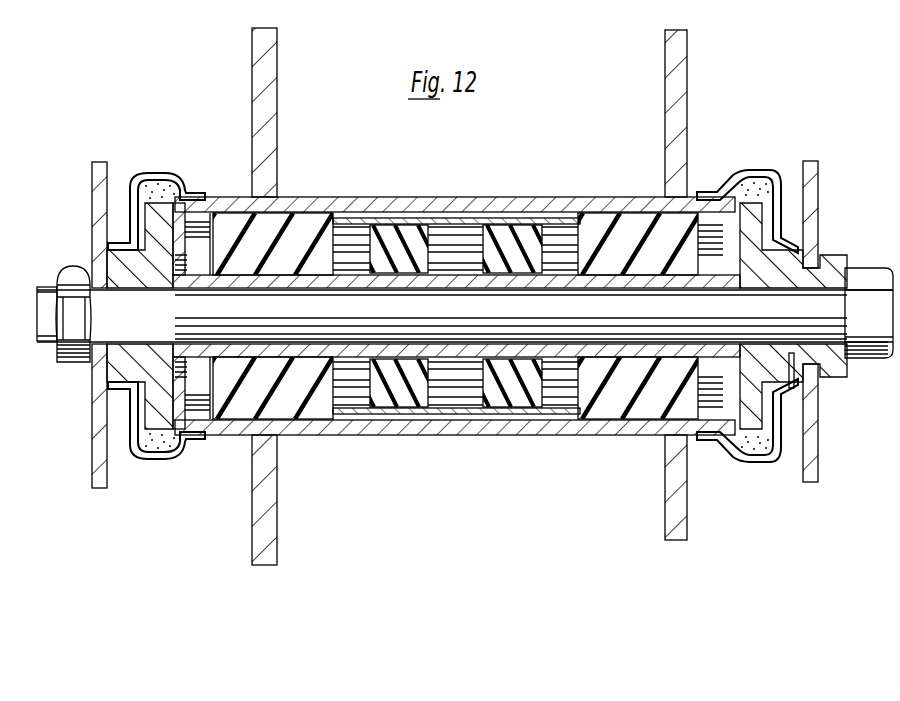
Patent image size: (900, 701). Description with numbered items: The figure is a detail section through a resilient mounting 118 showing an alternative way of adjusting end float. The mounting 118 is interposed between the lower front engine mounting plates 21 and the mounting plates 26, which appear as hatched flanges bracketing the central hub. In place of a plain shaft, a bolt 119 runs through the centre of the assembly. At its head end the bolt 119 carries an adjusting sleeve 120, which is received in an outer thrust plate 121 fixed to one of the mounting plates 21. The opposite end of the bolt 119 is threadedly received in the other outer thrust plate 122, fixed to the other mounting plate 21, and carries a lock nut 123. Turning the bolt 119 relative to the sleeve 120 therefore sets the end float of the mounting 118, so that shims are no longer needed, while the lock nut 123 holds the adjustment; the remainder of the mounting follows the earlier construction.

The lower front engine mounting plates 21 is at (96, 180).
The mounting plates 26 is at (265, 88).
The mounting 118 is at (448, 196).
The bolt 119 is at (465, 314).
The adjusting sleeve 120 is at (793, 380).
The outer thrust plate 121 is at (775, 442).
The outer thrust plate 122 is at (140, 455).
The lock nut 123 is at (75, 268).